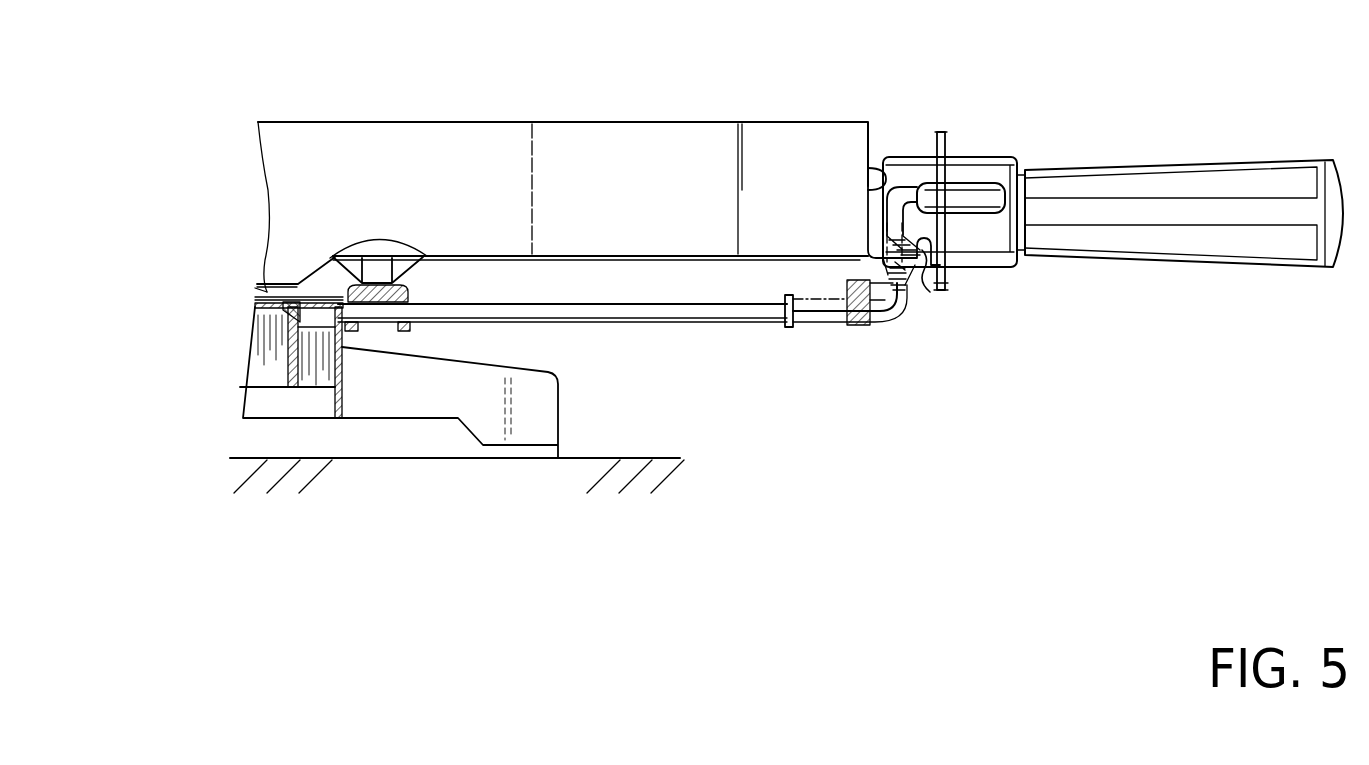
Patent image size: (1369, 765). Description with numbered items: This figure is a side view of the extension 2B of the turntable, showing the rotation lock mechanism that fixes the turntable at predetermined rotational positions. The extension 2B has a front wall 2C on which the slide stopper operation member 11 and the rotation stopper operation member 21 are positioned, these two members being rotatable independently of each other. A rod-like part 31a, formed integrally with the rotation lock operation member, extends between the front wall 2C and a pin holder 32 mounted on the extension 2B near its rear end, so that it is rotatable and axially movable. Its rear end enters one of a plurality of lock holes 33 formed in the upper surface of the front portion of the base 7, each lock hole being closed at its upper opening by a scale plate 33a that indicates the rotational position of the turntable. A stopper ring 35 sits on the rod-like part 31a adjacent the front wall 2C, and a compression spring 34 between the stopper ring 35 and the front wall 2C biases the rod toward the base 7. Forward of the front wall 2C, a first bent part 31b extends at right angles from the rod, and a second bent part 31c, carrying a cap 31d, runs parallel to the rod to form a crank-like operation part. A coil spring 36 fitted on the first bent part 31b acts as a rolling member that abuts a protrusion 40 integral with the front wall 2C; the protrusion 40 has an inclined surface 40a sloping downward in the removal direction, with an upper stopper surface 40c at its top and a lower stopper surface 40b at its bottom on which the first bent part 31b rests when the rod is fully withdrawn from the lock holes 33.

The extension 2B is at (570, 122).
The front wall 2C is at (869, 137).
The base 7 is at (383, 402).
The slide stopper operation member 11 is at (990, 155).
The rotation stopper operation member 21 is at (1180, 163).
The rod-like part 31a is at (638, 312).
The first bent part 31b is at (906, 286).
The second bent part 31c is at (909, 190).
The cap 31d is at (993, 213).
The pin holder 32 is at (407, 287).
The lock holes 33 is at (327, 313).
The scale plate 33a is at (302, 284).
The compression spring 34 is at (830, 328).
The stopper ring 35 is at (790, 330).
The coil spring 36 is at (930, 294).
The protrusion 40 is at (873, 228).
The inclined surface 40a is at (920, 240).
The lower stopper surface 40b is at (910, 280).
The upper stopper surface 40c is at (872, 178).